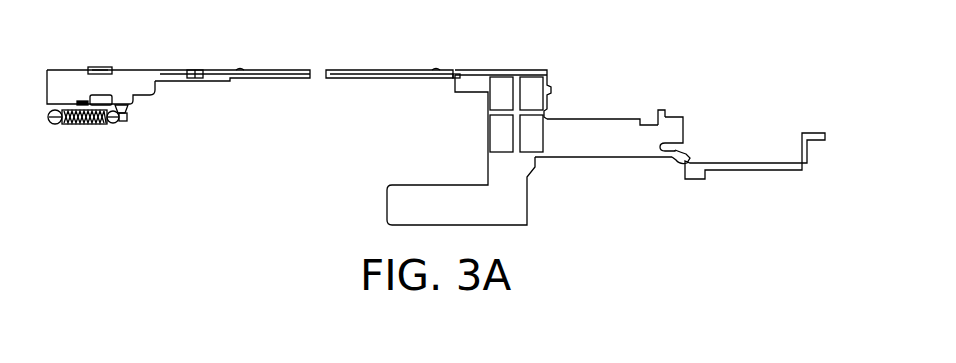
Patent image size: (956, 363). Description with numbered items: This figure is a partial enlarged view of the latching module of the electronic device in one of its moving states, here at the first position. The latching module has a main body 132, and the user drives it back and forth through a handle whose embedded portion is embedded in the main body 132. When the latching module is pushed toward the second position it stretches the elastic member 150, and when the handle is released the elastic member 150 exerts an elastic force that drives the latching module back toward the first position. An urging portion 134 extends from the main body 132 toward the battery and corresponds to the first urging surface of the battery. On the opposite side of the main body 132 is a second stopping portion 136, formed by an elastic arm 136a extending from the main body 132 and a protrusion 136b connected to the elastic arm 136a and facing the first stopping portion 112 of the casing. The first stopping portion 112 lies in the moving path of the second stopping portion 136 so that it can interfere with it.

The elastic member 150 is at (80, 120).
The main body 132 is at (590, 147).
The urging portion 134 is at (657, 112).
The second stopping portion 136 is at (697, 93).
The elastic arm 136a is at (668, 140).
The protrusion 136b is at (690, 155).
The first stopping portion 112 is at (695, 180).